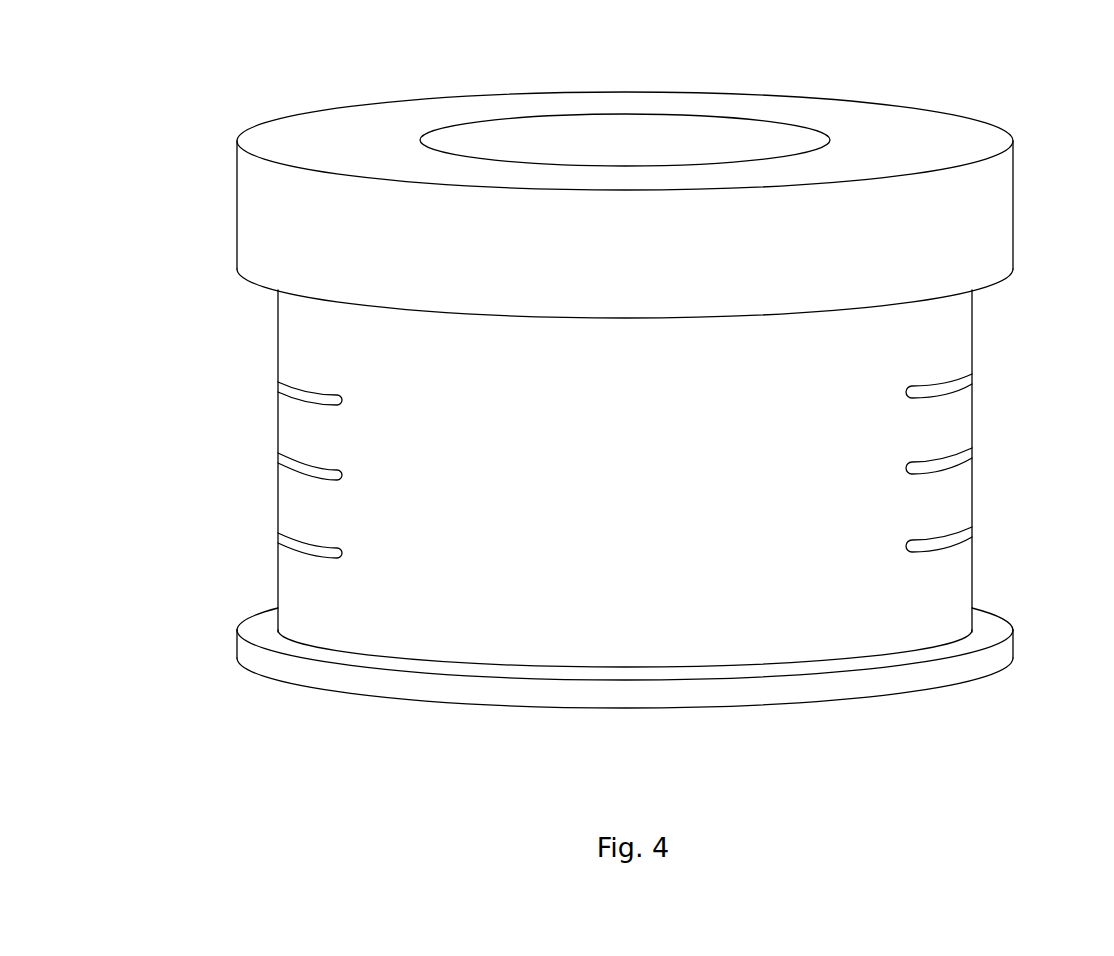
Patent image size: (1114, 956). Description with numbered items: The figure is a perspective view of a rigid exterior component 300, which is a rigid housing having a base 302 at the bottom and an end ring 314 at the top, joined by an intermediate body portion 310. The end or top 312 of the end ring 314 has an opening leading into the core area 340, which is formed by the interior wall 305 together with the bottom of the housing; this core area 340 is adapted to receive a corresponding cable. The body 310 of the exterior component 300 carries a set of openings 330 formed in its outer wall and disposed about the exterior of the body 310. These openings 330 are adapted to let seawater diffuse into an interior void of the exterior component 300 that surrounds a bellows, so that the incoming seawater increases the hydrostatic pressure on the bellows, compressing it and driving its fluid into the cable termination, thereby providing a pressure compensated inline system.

The rigid exterior component 300 is at (250, 762).
The base 302 is at (255, 660).
The interior wall 305 is at (645, 151).
The body portion 310 is at (842, 512).
The top 312 is at (900, 127).
The end ring 314 is at (247, 230).
The openings 330 is at (278, 458).
The core area 340 is at (532, 128).